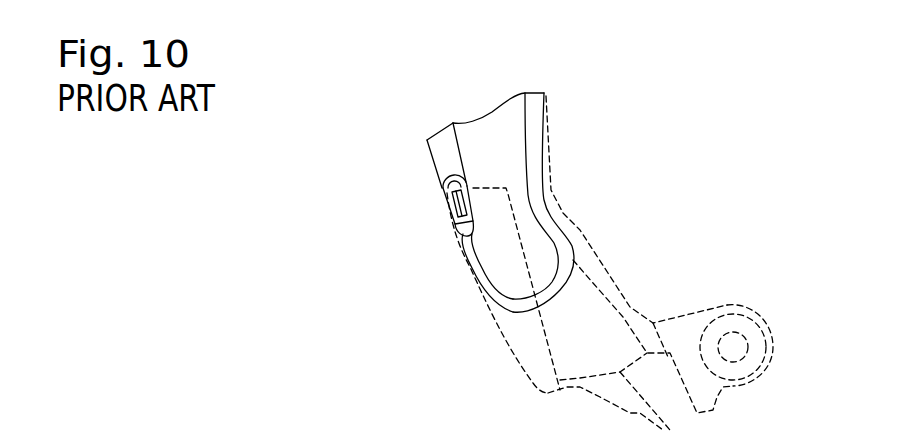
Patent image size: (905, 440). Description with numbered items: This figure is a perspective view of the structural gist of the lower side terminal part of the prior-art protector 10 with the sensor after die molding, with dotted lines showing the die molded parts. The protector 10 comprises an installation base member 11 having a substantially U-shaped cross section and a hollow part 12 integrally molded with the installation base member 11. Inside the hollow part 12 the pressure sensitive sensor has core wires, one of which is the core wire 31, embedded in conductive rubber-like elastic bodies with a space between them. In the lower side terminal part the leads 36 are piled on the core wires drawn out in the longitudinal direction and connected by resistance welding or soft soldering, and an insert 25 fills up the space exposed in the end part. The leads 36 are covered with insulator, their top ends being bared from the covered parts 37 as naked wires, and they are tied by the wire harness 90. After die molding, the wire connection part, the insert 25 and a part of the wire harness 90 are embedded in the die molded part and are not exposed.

The protector with the sensor 10 is at (412, 147).
The installation base member 11 is at (500, 128).
The hollow part 12 is at (431, 158).
The insert 25 is at (448, 204).
The core wire 31 is at (445, 189).
The leads 36 is at (468, 188).
The covered parts 37 is at (448, 218).
The wire harness 90 is at (535, 169).